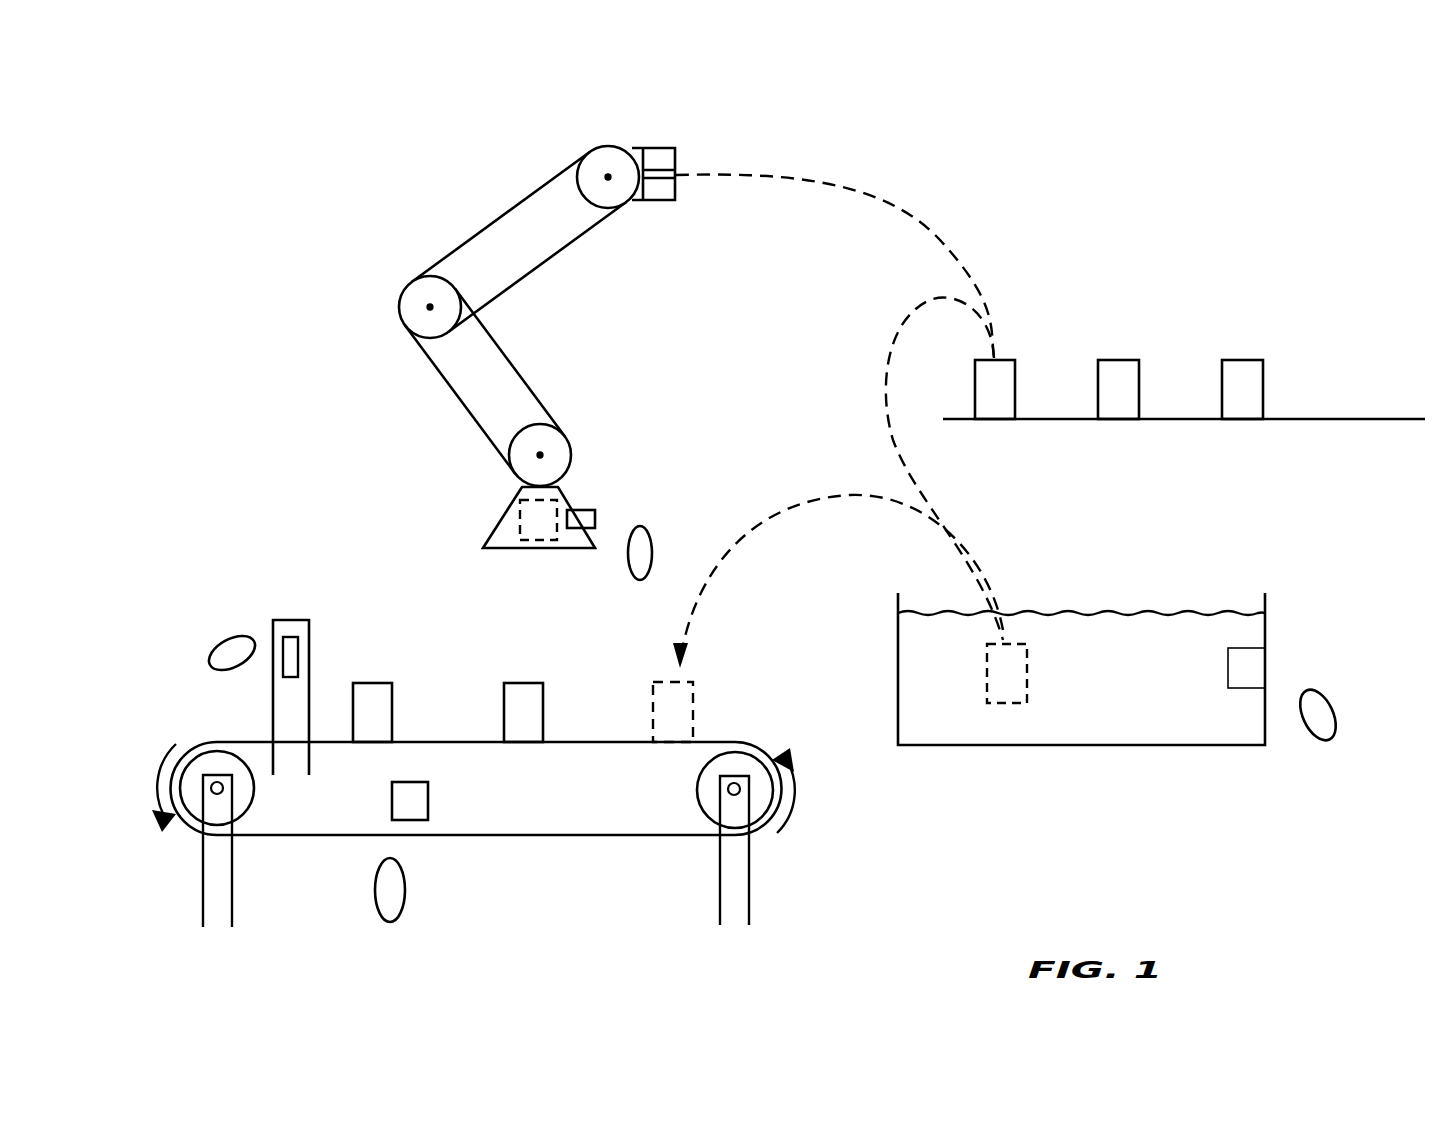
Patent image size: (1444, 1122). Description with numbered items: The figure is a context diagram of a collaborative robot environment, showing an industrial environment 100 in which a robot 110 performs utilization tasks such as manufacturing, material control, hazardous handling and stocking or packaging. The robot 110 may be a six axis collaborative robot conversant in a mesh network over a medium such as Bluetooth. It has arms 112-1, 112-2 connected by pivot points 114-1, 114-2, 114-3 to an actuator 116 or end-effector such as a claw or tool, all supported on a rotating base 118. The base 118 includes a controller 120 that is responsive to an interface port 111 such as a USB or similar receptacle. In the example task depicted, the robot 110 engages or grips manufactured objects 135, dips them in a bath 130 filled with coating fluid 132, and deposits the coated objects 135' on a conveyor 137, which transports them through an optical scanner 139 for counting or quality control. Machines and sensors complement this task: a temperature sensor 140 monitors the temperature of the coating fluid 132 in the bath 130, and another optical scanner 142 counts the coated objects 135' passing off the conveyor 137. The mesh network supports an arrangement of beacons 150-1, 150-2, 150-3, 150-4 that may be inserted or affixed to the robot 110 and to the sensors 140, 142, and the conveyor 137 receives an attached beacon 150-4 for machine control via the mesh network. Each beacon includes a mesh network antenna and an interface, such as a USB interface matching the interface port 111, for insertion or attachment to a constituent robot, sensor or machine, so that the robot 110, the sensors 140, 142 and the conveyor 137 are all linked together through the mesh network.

The industrial environment 100 is at (255, 217).
The robot 110 is at (408, 470).
The interface port 111 is at (575, 510).
The arm 112-1 is at (500, 362).
The arm 112-2 is at (508, 210).
The pivot point 114-1 is at (552, 443).
The pivot point 114-2 is at (405, 307).
The pivot point 114-3 is at (610, 157).
The actuator 116 is at (669, 148).
The rotating base 118 is at (492, 530).
The controller 120 is at (537, 541).
The bath 130 is at (1085, 747).
The coating fluid 132 is at (1103, 685).
The manufactured objects 135 is at (1156, 361).
The coated objects 135' is at (488, 684).
The conveyor 137 is at (652, 837).
The optical scanner 139 is at (292, 620).
The temperature sensor 140 is at (1270, 660).
The optical scanner 142 is at (300, 657).
The beacon 150-1 is at (653, 553).
The beacon 150-2 is at (1257, 670).
The beacon 150-3 is at (283, 640).
The beacon 150-4 is at (390, 803).